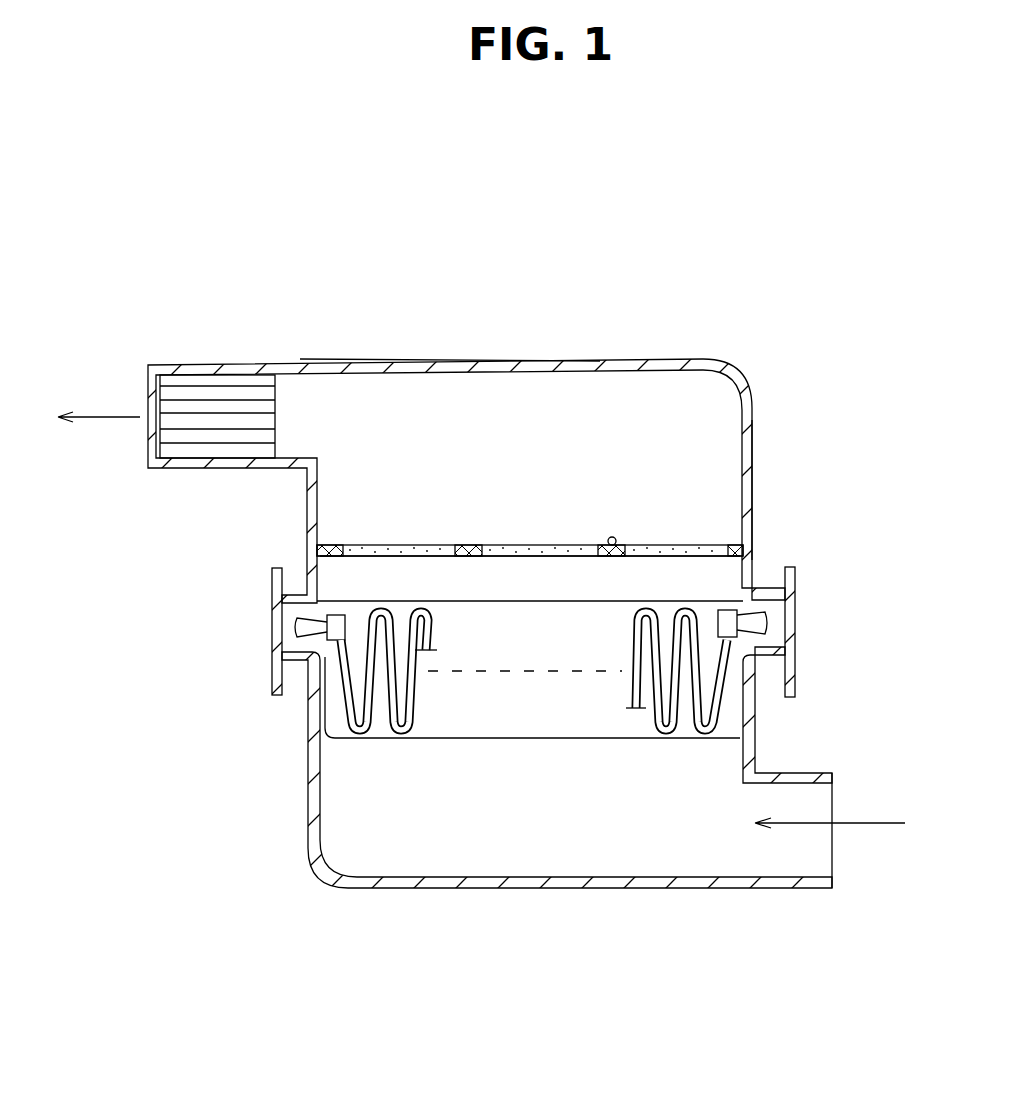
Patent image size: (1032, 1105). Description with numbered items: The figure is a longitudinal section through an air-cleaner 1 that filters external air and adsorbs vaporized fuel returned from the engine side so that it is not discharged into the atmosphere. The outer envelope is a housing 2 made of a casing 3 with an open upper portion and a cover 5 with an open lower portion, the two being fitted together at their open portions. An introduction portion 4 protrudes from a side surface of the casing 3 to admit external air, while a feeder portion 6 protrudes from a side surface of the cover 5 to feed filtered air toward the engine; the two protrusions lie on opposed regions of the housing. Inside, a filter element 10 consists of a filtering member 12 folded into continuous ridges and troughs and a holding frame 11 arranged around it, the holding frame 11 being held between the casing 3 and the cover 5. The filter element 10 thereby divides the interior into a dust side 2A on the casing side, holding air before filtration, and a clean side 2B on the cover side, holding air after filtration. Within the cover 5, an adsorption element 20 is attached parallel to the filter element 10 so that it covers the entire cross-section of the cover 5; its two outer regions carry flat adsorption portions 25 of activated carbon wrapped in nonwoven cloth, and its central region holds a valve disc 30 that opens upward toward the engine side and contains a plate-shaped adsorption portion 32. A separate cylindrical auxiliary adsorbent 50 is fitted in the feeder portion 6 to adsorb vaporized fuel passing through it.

The air-cleaner 1 is at (509, 301).
The housing 2 is at (746, 366).
The dust side 2A is at (523, 831).
The clean side 2B is at (560, 423).
The casing 3 is at (307, 802).
The introduction portion 4 is at (786, 889).
The cover 5 is at (753, 414).
The feeder portion 6 is at (238, 363).
The filter element 10 is at (608, 741).
The holding frame 11 is at (428, 742).
The filtering member 12 is at (380, 742).
The adsorption element 20 is at (571, 544).
The adsorption portion 25 is at (388, 545).
The valve disc 30 is at (513, 543).
The adsorption portion 32 is at (531, 557).
The auxiliary adsorbent 50 is at (195, 378).